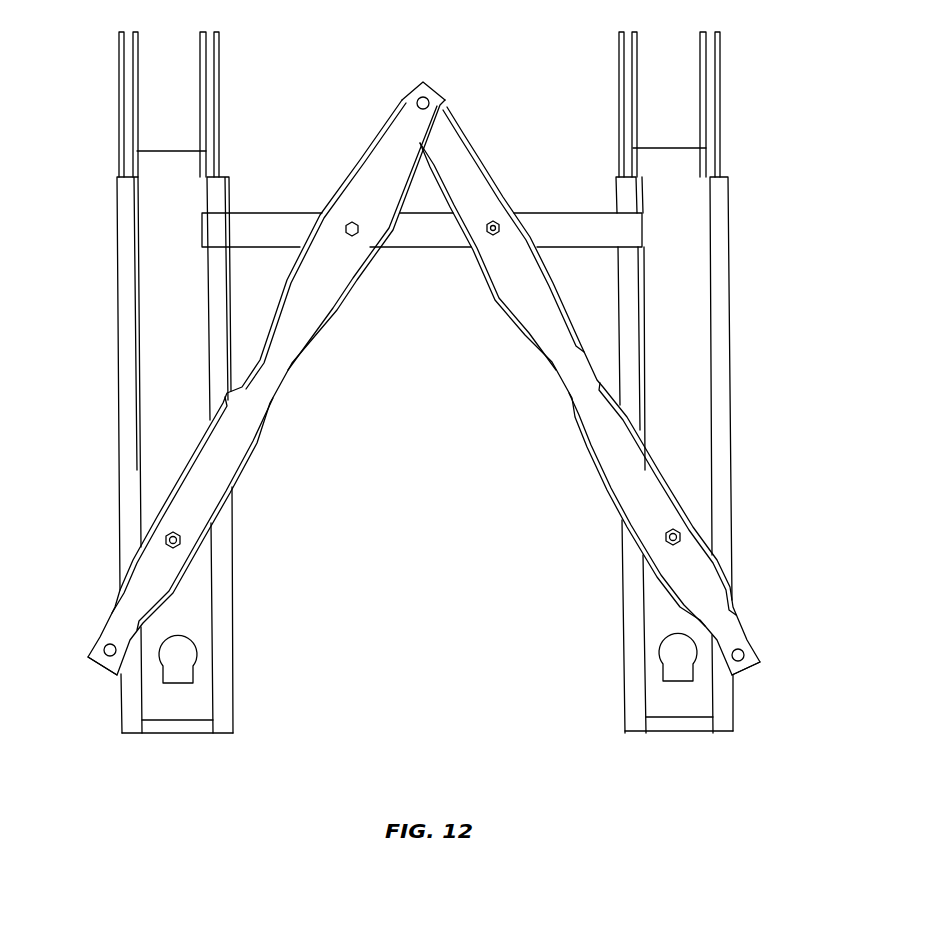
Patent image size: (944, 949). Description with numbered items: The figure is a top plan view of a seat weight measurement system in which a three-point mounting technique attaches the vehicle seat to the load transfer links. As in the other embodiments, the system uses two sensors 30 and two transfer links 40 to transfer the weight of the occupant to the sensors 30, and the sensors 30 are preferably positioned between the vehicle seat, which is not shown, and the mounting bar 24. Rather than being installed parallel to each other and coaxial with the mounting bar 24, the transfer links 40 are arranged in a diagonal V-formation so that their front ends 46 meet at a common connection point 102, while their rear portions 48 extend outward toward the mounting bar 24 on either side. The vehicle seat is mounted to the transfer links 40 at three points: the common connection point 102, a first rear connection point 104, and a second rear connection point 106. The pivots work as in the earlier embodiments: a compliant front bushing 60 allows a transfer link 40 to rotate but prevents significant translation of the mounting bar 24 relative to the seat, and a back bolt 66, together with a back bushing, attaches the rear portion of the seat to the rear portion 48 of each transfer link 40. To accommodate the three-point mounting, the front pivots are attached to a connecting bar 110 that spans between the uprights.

The mounting bar 24 is at (698, 448).
The sensor 30 is at (183, 663).
The transfer link 40 is at (228, 450).
The front portion of the transfer link 46 is at (439, 101).
The rear portion of the transfer link 48 is at (103, 670).
The front bushing 60 is at (350, 221).
The back bolt 66 is at (180, 543).
The common connection point 102 is at (412, 100).
The first rear connection point 104 is at (750, 654).
The second rear connection point 106 is at (101, 652).
The connecting bar 110 is at (535, 220).